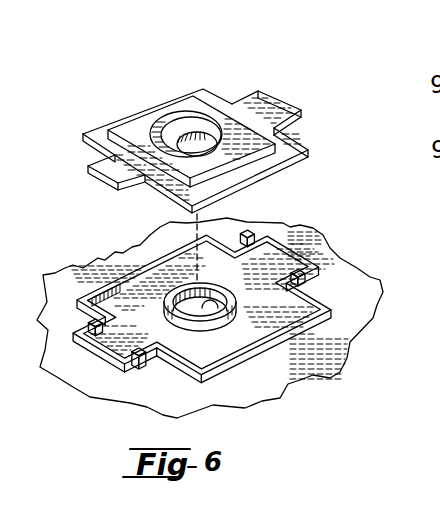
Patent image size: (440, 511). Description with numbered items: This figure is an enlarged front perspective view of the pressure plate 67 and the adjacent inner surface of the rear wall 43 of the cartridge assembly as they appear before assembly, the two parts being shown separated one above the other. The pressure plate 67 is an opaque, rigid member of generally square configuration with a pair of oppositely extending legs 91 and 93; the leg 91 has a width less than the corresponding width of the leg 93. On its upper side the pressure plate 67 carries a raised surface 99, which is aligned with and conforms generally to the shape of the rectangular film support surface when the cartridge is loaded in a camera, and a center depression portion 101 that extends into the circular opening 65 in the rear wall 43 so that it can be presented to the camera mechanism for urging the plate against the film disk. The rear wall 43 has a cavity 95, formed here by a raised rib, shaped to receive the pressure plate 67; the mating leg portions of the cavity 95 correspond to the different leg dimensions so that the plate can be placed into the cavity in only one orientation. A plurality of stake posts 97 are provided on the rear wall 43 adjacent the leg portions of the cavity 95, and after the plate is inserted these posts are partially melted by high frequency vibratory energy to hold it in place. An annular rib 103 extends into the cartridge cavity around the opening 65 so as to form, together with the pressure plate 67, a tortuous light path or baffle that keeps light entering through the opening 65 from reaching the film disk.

The pressure plate 67 is at (119, 96).
The leg 91 is at (92, 152).
The leg 93 is at (250, 105).
The raised surface 99 is at (137, 128).
The center depression portion 101 is at (189, 143).
The rear wall 43 is at (366, 314).
The cavity 95 is at (294, 320).
The stake posts 97 is at (245, 236).
The annular rib 103 is at (212, 318).
The circular opening 65 is at (212, 324).